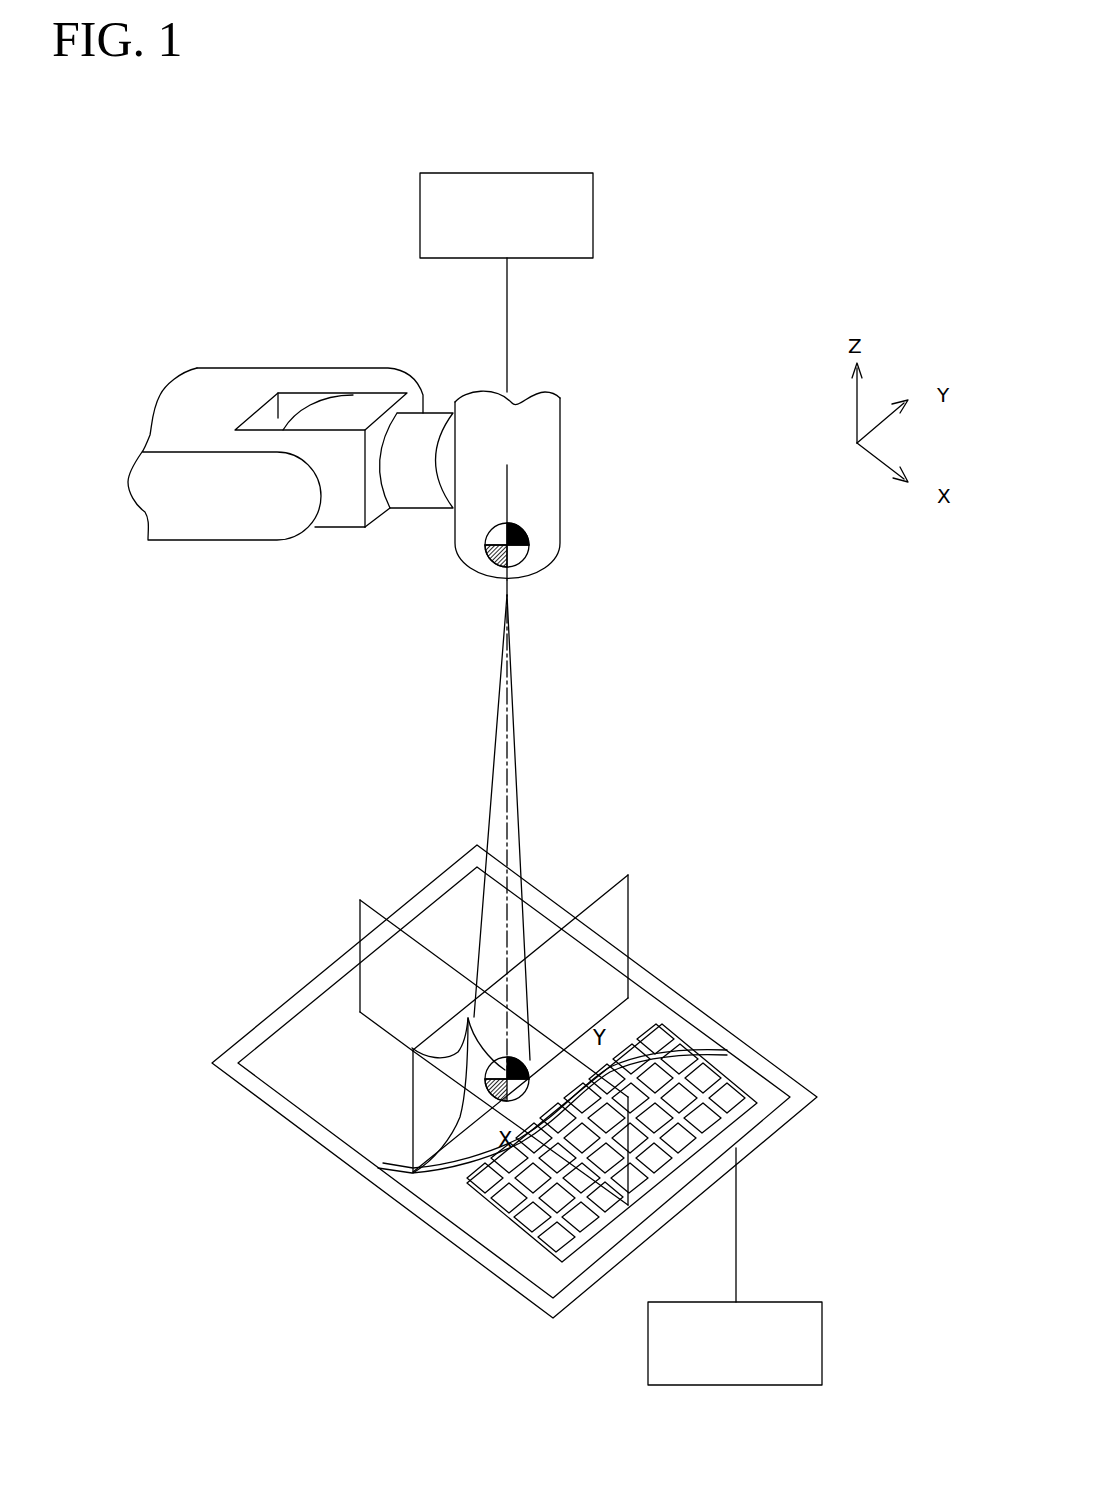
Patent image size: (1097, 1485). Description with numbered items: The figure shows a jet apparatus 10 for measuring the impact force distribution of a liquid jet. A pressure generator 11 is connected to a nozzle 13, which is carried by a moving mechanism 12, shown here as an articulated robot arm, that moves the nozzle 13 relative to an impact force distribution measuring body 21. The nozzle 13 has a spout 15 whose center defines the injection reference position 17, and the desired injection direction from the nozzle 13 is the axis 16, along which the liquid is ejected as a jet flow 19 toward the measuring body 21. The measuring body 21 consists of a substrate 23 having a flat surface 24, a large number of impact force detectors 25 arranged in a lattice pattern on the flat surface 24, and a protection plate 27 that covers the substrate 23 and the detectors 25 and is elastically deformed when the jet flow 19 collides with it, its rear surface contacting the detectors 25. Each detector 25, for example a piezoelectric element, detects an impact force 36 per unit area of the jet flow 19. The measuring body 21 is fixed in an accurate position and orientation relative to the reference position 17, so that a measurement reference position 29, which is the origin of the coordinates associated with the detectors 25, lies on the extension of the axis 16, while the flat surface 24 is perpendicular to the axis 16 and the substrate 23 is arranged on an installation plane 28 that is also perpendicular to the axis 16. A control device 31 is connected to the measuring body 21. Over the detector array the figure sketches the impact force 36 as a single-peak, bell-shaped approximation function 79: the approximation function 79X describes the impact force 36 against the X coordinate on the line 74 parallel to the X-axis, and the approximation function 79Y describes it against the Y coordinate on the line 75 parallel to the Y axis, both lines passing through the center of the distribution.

The jet apparatus 10 is at (897, 136).
The pressure generator 11 is at (593, 208).
The moving mechanism 12 is at (321, 367).
The nozzle 13 is at (561, 462).
The spout 15 is at (527, 553).
The axis 16 is at (510, 790).
The injection reference position 17 is at (524, 534).
The jet flow 19 is at (518, 720).
The impact force distribution measuring body 21 is at (660, 1003).
The substrate 23 is at (595, 1143).
The flat surface 24 is at (522, 1223).
The impact force detector 25 is at (500, 1205).
The protection plate 27 is at (316, 1006).
The installation plane 28 is at (757, 1153).
The measurement reference position 29 is at (528, 1090).
The control device 31 is at (793, 1300).
The impact force 36 is at (483, 1040).
The line 74 is at (390, 1036).
The line 75 is at (617, 1013).
The approximation function 79 is at (473, 1074).
The approximation function 79X is at (440, 1057).
The approximation function 79Y is at (468, 1018).